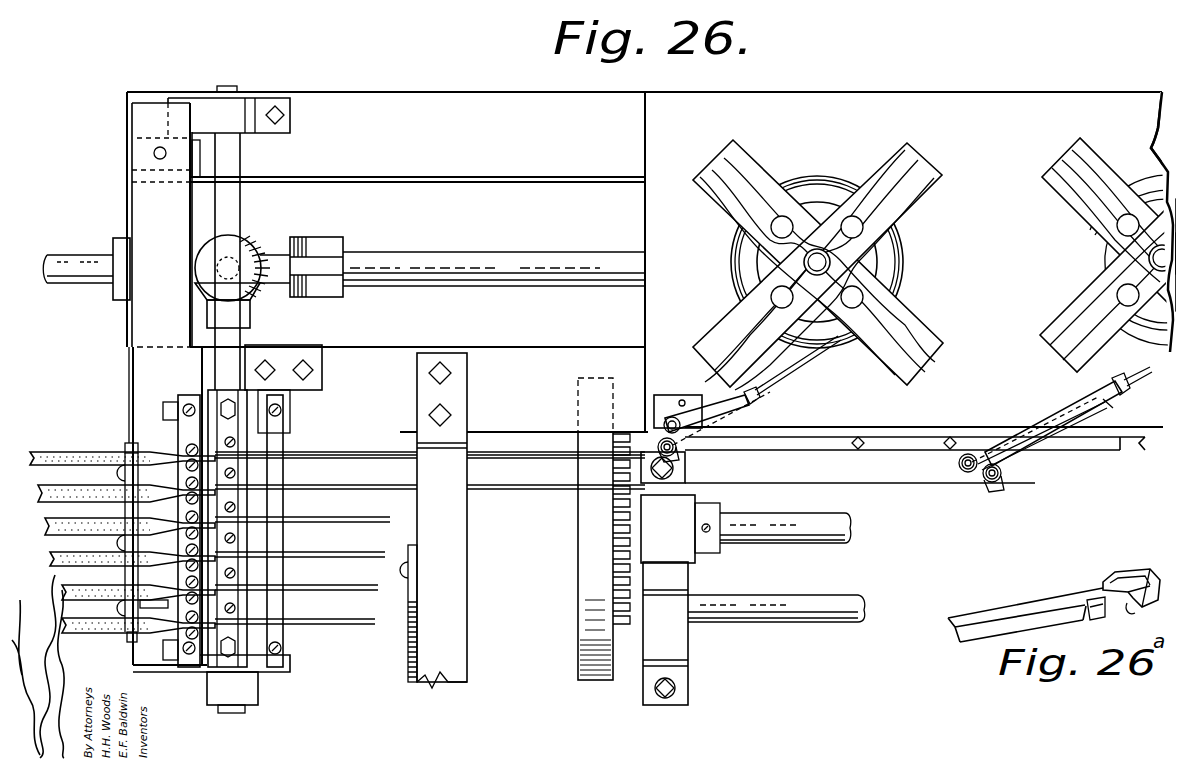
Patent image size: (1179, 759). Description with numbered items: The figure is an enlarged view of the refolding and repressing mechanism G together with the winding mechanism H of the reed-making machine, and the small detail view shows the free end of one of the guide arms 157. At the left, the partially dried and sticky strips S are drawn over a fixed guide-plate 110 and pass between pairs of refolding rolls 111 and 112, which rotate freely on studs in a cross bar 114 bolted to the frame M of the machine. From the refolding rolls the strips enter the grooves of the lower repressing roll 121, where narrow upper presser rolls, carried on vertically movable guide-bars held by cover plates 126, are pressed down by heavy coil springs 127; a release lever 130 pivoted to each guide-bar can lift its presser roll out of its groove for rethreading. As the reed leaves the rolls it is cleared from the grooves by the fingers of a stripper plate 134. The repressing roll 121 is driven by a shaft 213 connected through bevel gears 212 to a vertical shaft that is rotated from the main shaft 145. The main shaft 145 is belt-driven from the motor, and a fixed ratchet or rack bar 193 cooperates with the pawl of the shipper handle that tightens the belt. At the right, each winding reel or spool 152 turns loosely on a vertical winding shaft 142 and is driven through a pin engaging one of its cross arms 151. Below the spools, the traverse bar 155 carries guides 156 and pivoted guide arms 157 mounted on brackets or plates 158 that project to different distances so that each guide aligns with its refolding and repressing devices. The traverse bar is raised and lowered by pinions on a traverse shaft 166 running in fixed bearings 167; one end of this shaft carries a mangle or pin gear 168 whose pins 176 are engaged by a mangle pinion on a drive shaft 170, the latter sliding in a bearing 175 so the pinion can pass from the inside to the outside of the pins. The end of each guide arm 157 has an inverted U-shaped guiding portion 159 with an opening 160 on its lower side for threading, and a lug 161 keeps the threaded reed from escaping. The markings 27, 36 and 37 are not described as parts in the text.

In FIG. 26, the shaft 213 is at (225, 213).
In FIG. 26, the bevel gears 212 is at (256, 290).
In FIG. 26, the main shaft 145 is at (452, 262).
In FIG. 26, the cross arms 151 is at (893, 163).
In FIG. 26, the winding reel or spool 152 is at (853, 228).
In FIG. 26, the vertical winding shaft 142 is at (822, 263).
In FIG. 26, the winding mechanism H is at (859, 262).
In FIG. 26, the frame M is at (140, 377).
In FIG. 26, the cross bar 114 is at (186, 405).
In FIG. 26, the strips S is at (66, 458).
In FIG. 26, the refolding roll 111 is at (186, 450).
In FIG. 26, the refolding roll 112 is at (186, 464).
In FIG. 26, the coil spring 127 is at (275, 447).
In FIG. 26, the release lever 130 is at (303, 486).
In FIG. 26, the cover plate 126 is at (276, 505).
In FIG. 26, the type bars 27 is at (43, 547).
In FIG. 26, the stripper plate 134 is at (278, 573).
In FIG. 26, the lower repressing roll 121 is at (256, 608).
In FIG. 26, the fixed guide-plate 110 is at (136, 608).
In FIG. 26, the refolding and repressing mechanism G is at (205, 660).
In FIG. 26, the fixed ratchet or rack bar 193 is at (408, 652).
In FIG. 26, the mangle or pin gear 168 is at (586, 548).
In FIG. 26, the pins 176 is at (613, 552).
In FIG. 26, the direction arrows 36 is at (639, 574).
In FIG. 26, the bearing 175 is at (688, 644).
In FIG. 26, the fixed bearings 167 is at (664, 550).
In FIG. 26, the traverse shaft 166 is at (848, 527).
In FIG. 26, the drive shaft 170 is at (812, 600).
In FIG. 26, the brackets or plates 158 is at (655, 400).
In FIG. 26, the guide arms 157 is at (716, 400).
In FIG. 26a, the guide arms 157 is at (1021, 613).
In FIG. 26, the guides 156 is at (680, 460).
In FIG. 26, the traverse bar 155 is at (1096, 448).
In FIG. 26, the direction arrow 37 is at (1042, 473).
In FIG. 26a, the inverted U-shaped guiding portion 159 is at (1133, 577).
In FIG. 26a, the opening 160 is at (1140, 617).
In FIG. 26a, the lug 161 is at (1097, 619).